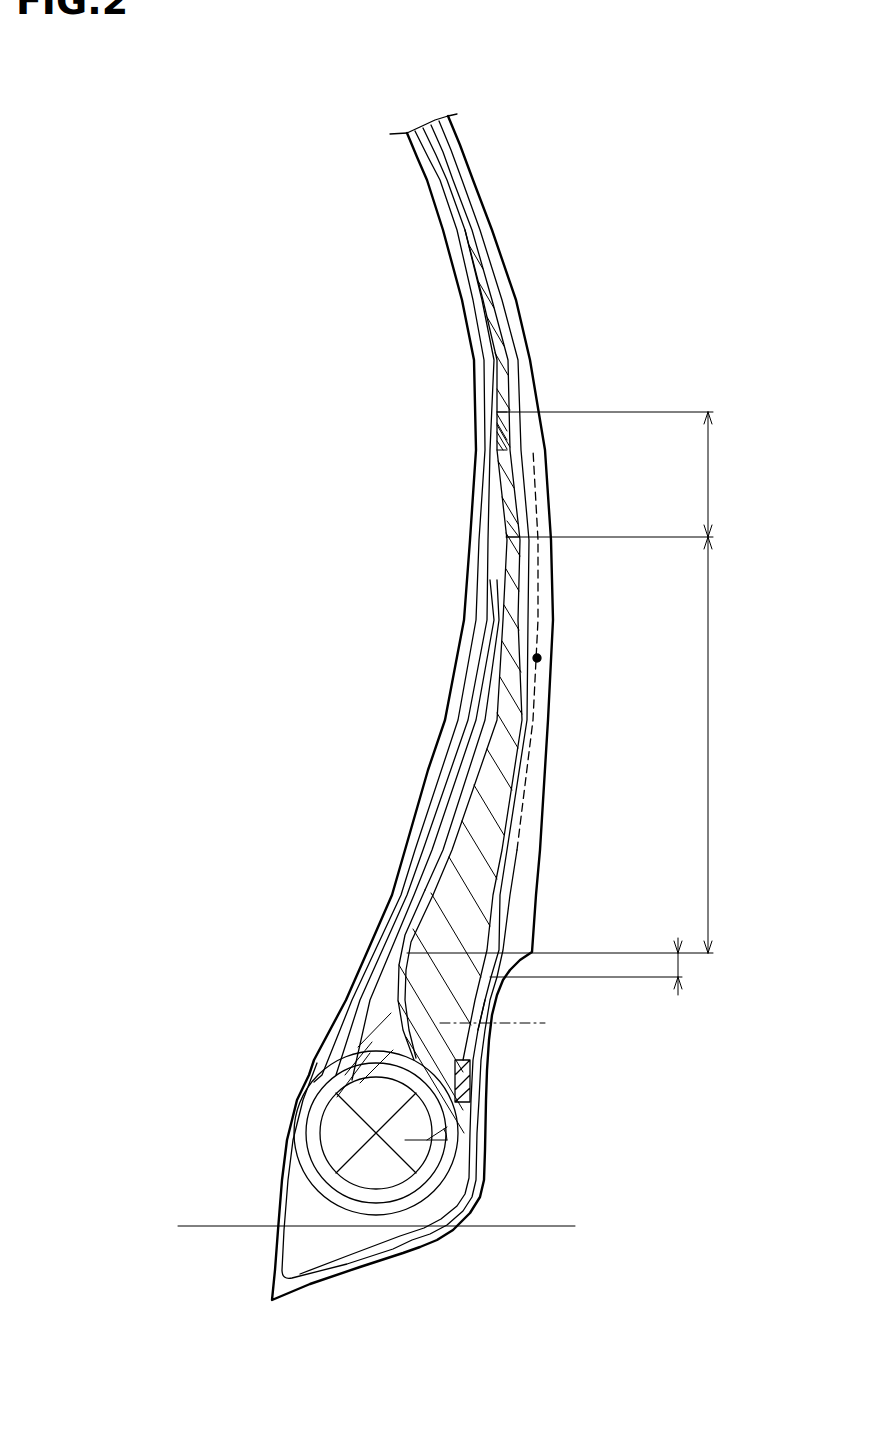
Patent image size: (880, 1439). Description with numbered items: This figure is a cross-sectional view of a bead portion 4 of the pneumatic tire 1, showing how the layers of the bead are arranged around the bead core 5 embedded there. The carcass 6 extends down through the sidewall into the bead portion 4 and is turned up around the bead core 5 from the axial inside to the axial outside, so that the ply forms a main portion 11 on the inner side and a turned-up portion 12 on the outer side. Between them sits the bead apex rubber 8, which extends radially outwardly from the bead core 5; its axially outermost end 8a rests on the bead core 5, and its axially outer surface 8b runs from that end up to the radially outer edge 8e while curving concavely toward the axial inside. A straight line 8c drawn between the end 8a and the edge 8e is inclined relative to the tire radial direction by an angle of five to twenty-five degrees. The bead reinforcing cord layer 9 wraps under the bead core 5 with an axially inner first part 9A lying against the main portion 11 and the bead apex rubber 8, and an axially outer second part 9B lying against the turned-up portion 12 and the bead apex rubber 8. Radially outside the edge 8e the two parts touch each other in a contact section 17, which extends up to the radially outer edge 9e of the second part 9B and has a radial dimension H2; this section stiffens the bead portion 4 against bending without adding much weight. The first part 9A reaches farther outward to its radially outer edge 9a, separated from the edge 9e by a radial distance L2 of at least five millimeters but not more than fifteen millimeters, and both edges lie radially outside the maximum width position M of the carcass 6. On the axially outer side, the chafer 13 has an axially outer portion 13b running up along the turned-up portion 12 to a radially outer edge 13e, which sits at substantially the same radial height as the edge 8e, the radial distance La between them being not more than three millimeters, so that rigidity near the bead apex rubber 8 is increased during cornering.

The pneumatic tire 1 is at (639, 157).
The bead portion 4 is at (615, 1222).
The bead core 5 is at (345, 1130).
The carcass 6 is at (462, 230).
The bead apex rubber 8 is at (378, 1050).
The axially outermost end of the bead apex rubber 8a is at (465, 1088).
The axially outer surface of the bead apex rubber 8b is at (398, 1002).
The straight line 8c is at (512, 1023).
The radially outer edge of the bead apex rubber 8e is at (405, 950).
The bead reinforcing cord layer 9 is at (487, 660).
The axially inner first part 9A is at (497, 582).
The axially outer second part 9B is at (512, 602).
The radially outer edge of the axially inner first part 9a is at (497, 412).
The radially outer edge of the axially outer second part 9e is at (506, 537).
The main portion 11 is at (492, 465).
The turned-up portion 12 is at (497, 728).
The chafer 13 is at (352, 1262).
The axially outer portion of the chafer 13b is at (450, 1198).
The radially outer edge of the axially outer chafer portion 13e is at (532, 950).
The contact section 17 is at (459, 754).
The maximum width position M is at (545, 658).
The bead base line BL is at (226, 1226).
The radial distance between the radially outer edges 9a and 9e L2 is at (725, 474).
The radial dimension of the contact section H2 is at (729, 745).
The distance between the radially outer edges 13e and 8e La is at (609, 966).